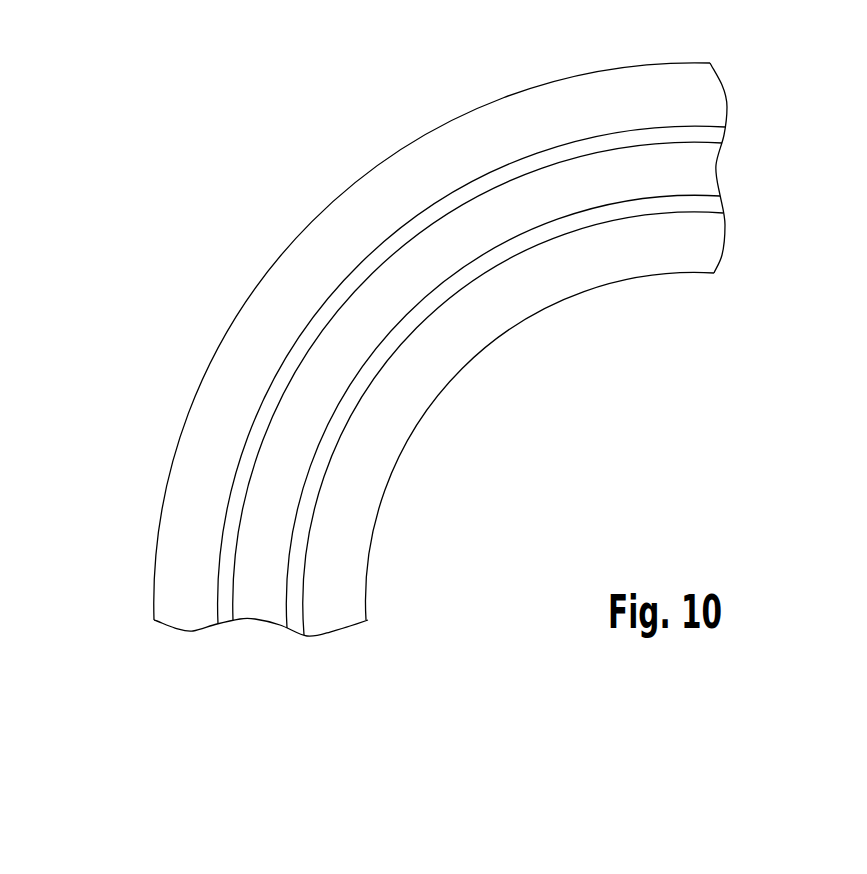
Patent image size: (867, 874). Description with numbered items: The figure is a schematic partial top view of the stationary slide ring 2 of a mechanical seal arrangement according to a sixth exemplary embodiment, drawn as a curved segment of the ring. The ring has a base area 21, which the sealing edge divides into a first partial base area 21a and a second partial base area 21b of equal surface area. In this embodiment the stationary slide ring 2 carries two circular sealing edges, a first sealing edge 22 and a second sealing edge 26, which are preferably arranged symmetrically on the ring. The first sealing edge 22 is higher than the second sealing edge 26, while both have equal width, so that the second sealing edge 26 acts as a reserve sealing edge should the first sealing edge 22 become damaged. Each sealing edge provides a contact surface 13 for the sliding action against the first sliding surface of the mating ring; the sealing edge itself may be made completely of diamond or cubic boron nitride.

The stationary slide ring 2 is at (248, 173).
The base area 21 is at (245, 363).
The first partial base area 21a is at (543, 293).
The second partial base area 21b is at (502, 125).
The first sealing edge 22 is at (627, 138).
The second sealing edge 26 is at (650, 205).
The contact surface 13 is at (237, 480).